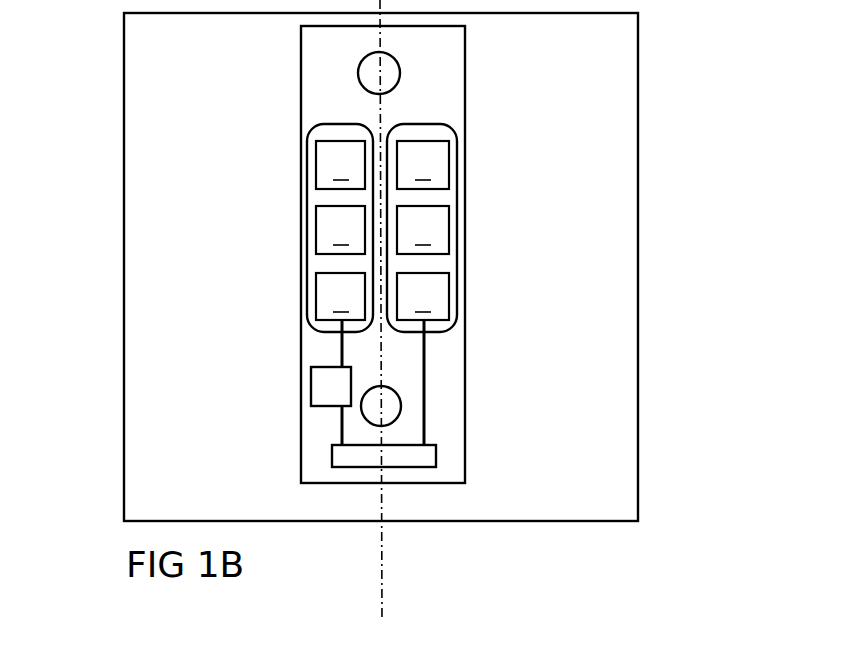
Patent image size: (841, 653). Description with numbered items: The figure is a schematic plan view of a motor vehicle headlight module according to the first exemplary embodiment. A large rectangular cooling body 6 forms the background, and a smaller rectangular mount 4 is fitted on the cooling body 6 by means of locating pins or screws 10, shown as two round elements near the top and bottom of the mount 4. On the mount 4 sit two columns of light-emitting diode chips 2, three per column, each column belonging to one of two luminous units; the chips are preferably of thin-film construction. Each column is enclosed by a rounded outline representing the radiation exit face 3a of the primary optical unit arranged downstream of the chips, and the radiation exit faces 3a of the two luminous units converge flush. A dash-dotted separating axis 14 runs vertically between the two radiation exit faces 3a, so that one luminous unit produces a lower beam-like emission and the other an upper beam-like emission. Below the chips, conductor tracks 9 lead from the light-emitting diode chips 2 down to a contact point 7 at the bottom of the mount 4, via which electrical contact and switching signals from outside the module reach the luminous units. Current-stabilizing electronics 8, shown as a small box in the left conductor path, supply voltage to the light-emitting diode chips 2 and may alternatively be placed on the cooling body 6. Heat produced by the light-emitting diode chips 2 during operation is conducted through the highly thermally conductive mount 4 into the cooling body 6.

The light-emitting diode chips 2 is at (382, 230).
The radiation exit faces 3a is at (308, 146).
The mount 4 is at (442, 93).
The cooling body 6 is at (600, 299).
The contact point 7 is at (353, 459).
The current-stabilizing electronics 8 is at (327, 390).
The conductor tracks 9 is at (425, 391).
The locating pins or screws 10 is at (372, 75).
The separating axis 14 is at (383, 555).